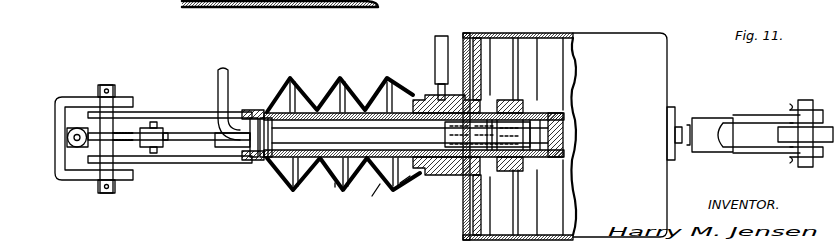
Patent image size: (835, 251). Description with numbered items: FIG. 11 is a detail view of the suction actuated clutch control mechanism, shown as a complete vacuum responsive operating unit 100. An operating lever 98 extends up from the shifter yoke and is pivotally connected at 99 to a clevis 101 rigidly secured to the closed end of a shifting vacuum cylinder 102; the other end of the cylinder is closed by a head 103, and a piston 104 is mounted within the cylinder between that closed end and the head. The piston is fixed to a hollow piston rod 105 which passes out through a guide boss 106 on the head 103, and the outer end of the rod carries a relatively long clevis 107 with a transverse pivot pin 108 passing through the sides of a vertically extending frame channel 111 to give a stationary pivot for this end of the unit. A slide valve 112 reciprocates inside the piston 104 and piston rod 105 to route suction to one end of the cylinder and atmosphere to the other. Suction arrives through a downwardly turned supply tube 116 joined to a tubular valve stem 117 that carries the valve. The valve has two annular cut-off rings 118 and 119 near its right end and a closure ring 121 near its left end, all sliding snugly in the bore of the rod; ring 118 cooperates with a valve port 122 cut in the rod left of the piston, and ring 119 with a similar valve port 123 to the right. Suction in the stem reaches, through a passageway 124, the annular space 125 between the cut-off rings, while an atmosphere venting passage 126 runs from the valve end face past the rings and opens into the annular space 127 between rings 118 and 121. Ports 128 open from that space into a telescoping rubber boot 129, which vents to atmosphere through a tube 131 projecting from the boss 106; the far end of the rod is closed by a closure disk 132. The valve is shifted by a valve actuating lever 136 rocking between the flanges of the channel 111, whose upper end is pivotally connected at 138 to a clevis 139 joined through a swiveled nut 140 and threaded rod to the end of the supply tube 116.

The operating lever 98 is at (783, 138).
The pivotal connection 99 is at (805, 100).
The vacuum responsive operating unit 100 is at (643, 27).
The clevis 101 is at (742, 115).
The shifting vacuum cylinder 102 is at (588, 42).
The head 103 is at (478, 62).
The piston 104 is at (530, 186).
The piston rod 105 is at (312, 185).
The guide boss 106 is at (425, 96).
The clevis 107 is at (209, 163).
The pivot pin 108 is at (115, 100).
The frame channel 111 is at (80, 176).
The slide valve 112 is at (497, 180).
The supply tube 116 is at (226, 90).
The tubular valve stem 117 is at (347, 133).
The cut-off ring 118 is at (455, 178).
The cut-off ring 119 is at (570, 123).
The closure ring 121 is at (248, 160).
The valve port 122 is at (512, 95).
The valve port 123 is at (565, 152).
The passageway 124 is at (522, 110).
The annular space 125 is at (570, 170).
The atmosphere venting passage 126 is at (570, 110).
The annular space 127 is at (340, 185).
The ports 128 is at (290, 108).
The rubber boot 129 is at (385, 196).
The tube 131 is at (436, 48).
The closure disk 132 is at (568, 137).
The valve actuating lever 136 is at (75, 127).
The pivotal connection 138 is at (80, 133).
The clevis 139 is at (140, 150).
The swiveled nut 140 is at (152, 132).